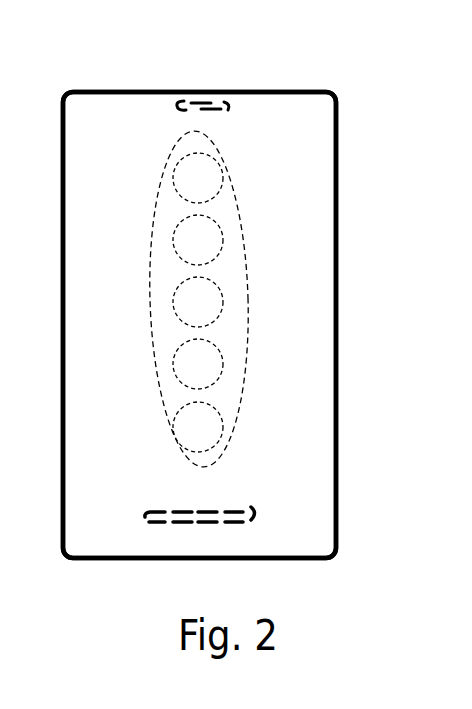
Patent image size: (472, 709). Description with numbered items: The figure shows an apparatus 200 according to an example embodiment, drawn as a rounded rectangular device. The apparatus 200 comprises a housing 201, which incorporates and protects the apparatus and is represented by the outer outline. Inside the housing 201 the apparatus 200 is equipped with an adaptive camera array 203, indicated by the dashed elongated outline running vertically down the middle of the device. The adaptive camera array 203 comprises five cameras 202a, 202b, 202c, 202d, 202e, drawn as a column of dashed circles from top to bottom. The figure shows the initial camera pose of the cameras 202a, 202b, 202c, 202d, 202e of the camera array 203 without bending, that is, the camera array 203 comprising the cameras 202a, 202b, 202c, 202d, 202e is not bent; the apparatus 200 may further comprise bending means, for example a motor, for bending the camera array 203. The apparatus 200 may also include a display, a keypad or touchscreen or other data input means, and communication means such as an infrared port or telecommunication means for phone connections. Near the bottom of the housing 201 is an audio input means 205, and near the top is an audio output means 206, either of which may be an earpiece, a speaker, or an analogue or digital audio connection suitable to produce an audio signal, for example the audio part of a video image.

The apparatus 200 is at (286, 50).
The housing 201 is at (338, 272).
The camera 202a is at (198, 178).
The camera 202b is at (198, 240).
The camera 202c is at (198, 302).
The camera 202d is at (198, 364).
The camera 202e is at (198, 427).
The adaptive camera array 203 is at (226, 158).
The audio input means 205 is at (240, 513).
The audio output means 206 is at (218, 104).